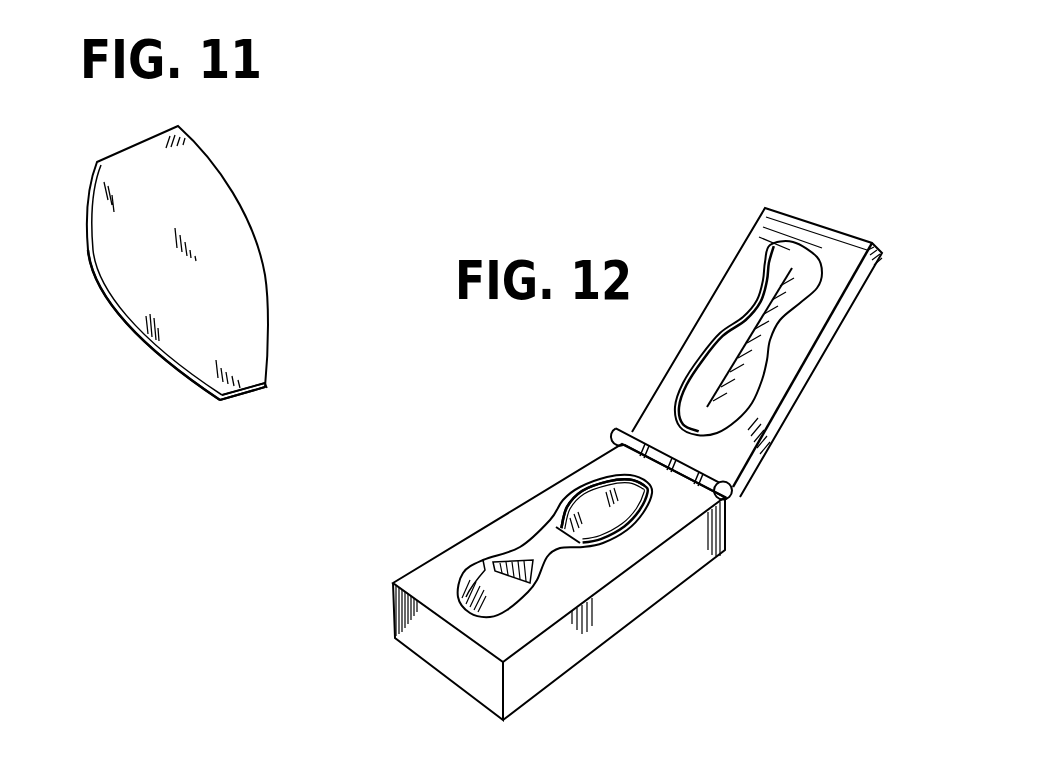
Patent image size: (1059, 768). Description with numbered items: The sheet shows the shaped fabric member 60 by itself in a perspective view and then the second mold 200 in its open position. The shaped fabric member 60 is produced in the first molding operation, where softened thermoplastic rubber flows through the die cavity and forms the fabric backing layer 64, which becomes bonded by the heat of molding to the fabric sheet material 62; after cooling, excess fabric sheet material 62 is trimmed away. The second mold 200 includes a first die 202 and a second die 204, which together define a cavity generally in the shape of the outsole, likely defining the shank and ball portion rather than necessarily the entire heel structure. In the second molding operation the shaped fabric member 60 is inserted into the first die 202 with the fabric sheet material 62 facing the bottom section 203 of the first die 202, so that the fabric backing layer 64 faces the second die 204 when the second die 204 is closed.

In FIG. 11, the shaped fabric member 60 is at (100, 285).
In FIG. 12, the shaped fabric member 60 is at (592, 518).
In FIG. 11, the fabric sheet material 62 is at (210, 184).
In FIG. 11, the fabric backing layer 64 is at (196, 400).
In FIG. 12, the fabric backing layer 64 is at (627, 502).
In FIG. 12, the second mold 200 is at (655, 374).
In FIG. 12, the first die 202 is at (770, 217).
In FIG. 12, the bottom section 203 is at (487, 588).
In FIG. 12, the second die 204 is at (436, 598).